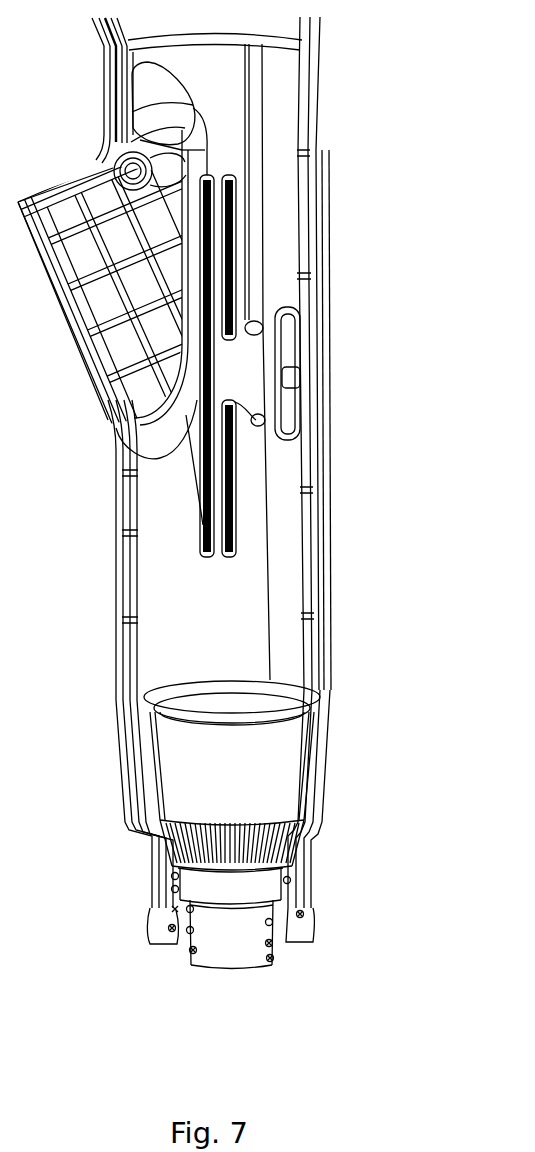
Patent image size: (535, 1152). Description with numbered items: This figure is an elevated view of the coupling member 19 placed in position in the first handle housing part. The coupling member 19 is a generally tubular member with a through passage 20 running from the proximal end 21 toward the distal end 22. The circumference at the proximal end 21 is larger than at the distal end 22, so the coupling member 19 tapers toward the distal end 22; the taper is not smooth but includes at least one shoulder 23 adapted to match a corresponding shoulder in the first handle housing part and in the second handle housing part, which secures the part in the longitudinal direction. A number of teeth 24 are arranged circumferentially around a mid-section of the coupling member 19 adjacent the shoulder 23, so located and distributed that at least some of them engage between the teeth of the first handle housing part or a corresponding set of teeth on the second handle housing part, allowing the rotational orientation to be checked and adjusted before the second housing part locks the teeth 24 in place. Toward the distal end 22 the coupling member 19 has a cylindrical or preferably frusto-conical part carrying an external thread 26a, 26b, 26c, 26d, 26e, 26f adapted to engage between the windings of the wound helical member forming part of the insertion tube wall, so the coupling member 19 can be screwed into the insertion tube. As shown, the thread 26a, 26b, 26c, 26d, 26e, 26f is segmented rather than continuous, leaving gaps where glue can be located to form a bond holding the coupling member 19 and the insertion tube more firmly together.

The coupling member 19 is at (140, 767).
The through passage 20 is at (221, 668).
The proximal end 21 is at (193, 722).
The distal end 22 is at (230, 965).
The shoulder 23 is at (157, 822).
The teeth 24 is at (300, 840).
The external thread segment 26a is at (190, 950).
The external thread segment 26b is at (168, 928).
The external thread segment 26c is at (172, 906).
The external thread segment 26d is at (274, 958).
The external thread segment 26e is at (273, 943).
The external thread segment 26f is at (304, 913).